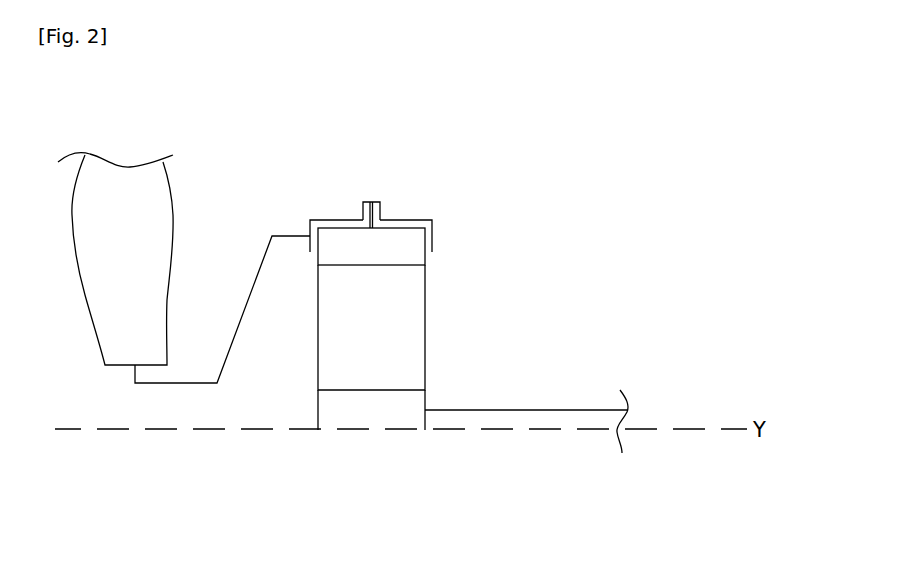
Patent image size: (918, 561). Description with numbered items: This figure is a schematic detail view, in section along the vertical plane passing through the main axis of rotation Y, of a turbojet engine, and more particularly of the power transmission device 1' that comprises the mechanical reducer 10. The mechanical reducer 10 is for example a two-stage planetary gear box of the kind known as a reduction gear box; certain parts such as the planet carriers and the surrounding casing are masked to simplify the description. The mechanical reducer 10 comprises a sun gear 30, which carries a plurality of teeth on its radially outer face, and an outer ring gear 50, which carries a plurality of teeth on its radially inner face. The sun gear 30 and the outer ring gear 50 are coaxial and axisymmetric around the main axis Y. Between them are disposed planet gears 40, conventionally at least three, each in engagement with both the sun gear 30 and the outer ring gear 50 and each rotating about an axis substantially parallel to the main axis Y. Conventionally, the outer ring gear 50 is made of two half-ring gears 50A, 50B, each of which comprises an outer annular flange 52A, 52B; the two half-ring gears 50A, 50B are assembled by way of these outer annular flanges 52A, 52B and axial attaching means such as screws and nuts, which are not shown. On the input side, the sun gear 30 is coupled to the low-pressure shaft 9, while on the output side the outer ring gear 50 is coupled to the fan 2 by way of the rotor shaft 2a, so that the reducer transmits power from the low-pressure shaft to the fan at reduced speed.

The fan 2 is at (125, 185).
The rotor shaft 2a is at (243, 310).
The power transmission device 1' is at (471, 288).
The mechanical reducer 10 is at (410, 309).
The outer ring gear 50 is at (393, 194).
The half-ring gear 50A is at (318, 217).
The half-ring gear 50B is at (417, 220).
The outer annular flange 52A is at (363, 202).
The outer annular flange 52B is at (383, 203).
The planet gear 40 is at (347, 337).
The sun gear 30 is at (380, 408).
The low-pressure shaft 9 is at (563, 408).